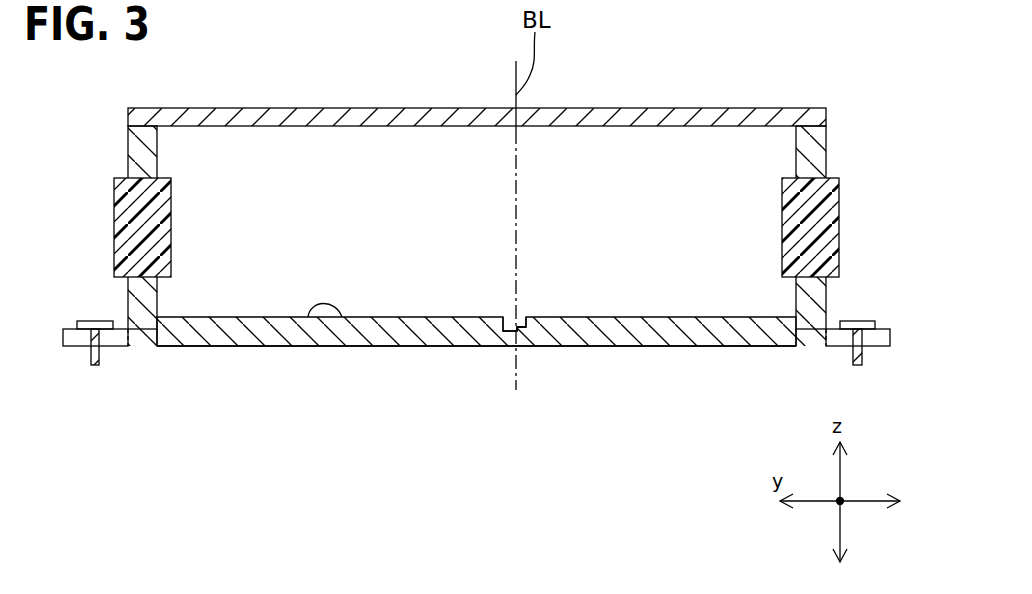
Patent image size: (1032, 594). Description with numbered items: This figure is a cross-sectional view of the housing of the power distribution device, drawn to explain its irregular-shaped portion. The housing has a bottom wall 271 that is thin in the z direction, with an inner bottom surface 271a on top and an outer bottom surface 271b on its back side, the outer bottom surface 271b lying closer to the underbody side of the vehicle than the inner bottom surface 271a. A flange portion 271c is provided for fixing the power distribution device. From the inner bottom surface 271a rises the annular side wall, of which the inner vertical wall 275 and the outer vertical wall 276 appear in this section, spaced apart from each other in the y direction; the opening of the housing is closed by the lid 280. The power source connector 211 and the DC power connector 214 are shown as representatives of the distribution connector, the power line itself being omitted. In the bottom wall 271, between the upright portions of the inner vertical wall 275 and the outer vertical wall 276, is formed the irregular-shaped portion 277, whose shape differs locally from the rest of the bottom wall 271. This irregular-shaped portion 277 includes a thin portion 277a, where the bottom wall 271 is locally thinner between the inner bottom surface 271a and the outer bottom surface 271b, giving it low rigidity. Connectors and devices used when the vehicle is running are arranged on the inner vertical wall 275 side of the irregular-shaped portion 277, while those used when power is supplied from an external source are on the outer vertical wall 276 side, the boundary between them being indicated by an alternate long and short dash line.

The lid 280 is at (695, 108).
The inner vertical wall 275 is at (826, 147).
The outer vertical wall 276 is at (128, 150).
The DC power connector 214 is at (114, 210).
The power source connector 211 is at (839, 210).
The bottom wall 271 is at (201, 348).
The inner bottom surface 271a is at (337, 317).
The outer bottom surface 271b is at (259, 348).
The flange portion 271c is at (63, 337).
The irregular-shaped portion 277 is at (523, 305).
The thin portion 277a is at (547, 328).